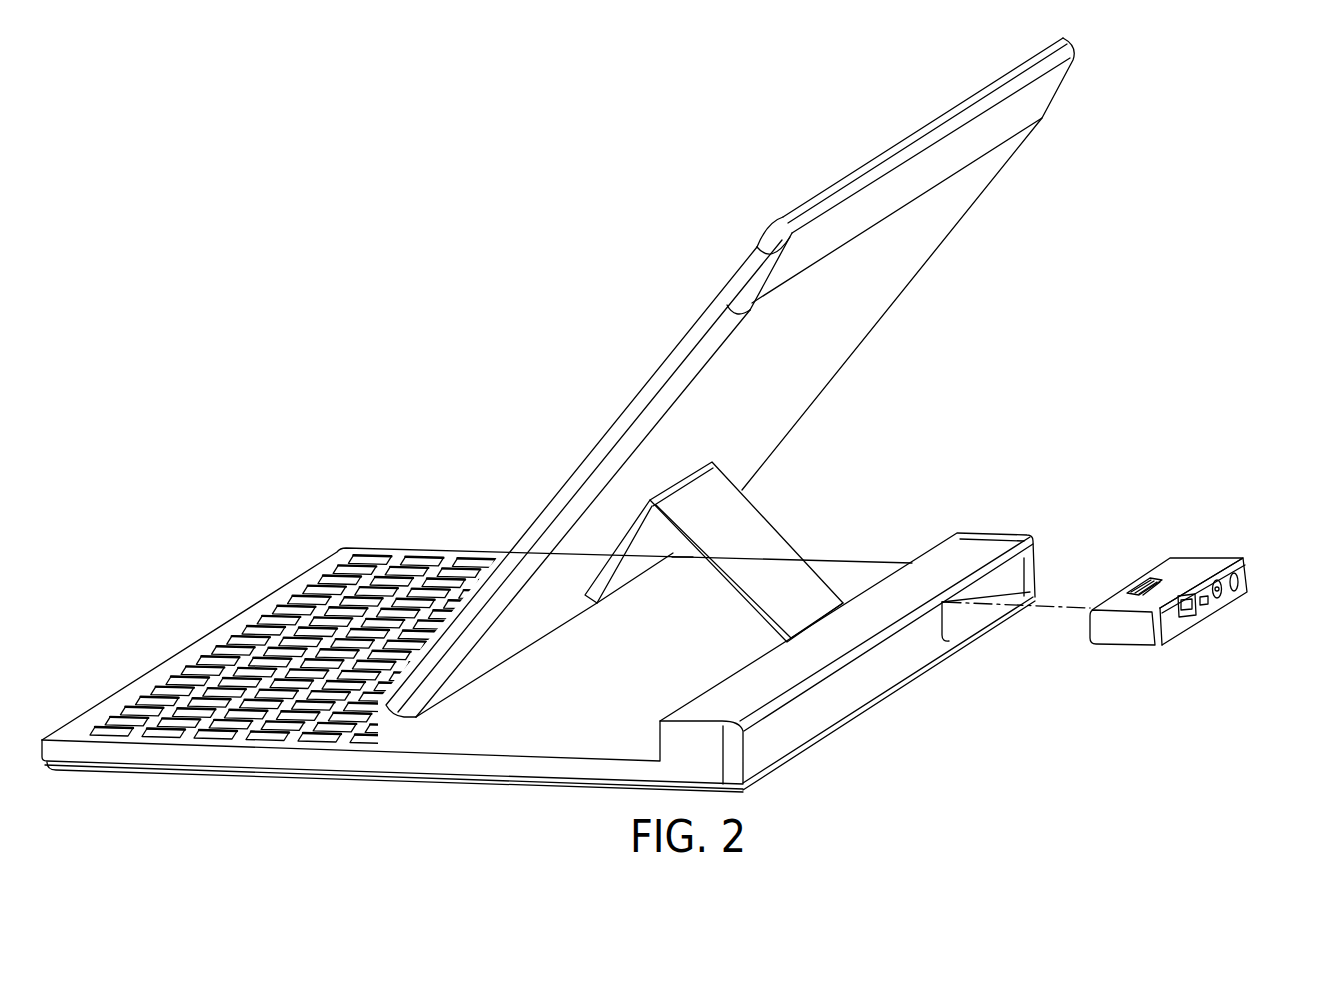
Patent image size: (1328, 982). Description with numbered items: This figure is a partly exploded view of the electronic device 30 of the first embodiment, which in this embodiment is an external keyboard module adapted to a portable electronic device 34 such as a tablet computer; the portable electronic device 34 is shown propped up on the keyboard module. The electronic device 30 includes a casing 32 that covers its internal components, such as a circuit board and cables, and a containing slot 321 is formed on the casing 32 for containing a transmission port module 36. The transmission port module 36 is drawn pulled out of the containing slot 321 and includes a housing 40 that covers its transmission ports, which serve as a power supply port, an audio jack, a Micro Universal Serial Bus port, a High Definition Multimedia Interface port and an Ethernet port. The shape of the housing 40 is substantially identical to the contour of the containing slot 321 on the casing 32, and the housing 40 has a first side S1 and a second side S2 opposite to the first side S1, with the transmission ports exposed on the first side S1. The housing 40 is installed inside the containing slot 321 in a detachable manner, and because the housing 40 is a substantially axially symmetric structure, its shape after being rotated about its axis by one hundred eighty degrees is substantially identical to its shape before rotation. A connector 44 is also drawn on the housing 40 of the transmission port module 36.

The electronic device 30 is at (300, 240).
The casing 32 is at (987, 530).
The containing slot 321 is at (960, 613).
The portable electronic device 34 is at (880, 135).
The transmission port module 36 is at (1223, 540).
The housing 40 is at (1192, 556).
The connector 44 is at (1141, 577).
The first side S1 is at (1225, 596).
The second side S2 is at (1098, 608).